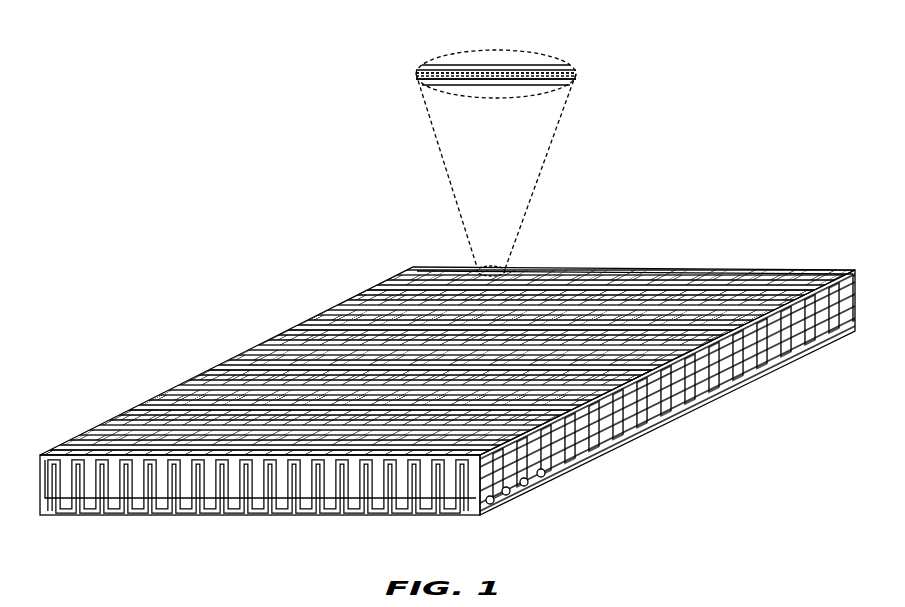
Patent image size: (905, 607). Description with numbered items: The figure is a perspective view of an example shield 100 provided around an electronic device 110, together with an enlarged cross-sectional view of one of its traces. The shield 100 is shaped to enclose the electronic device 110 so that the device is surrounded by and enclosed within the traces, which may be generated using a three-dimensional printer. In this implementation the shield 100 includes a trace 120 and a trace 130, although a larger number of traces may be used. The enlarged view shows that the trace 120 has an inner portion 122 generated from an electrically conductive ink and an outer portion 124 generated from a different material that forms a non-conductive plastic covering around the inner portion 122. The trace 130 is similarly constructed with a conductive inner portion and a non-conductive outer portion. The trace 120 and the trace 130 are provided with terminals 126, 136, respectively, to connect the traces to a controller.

The shield 100 is at (452, 286).
The electronic device 110 is at (148, 508).
The trace 120 is at (408, 66).
The inner portion 122 is at (490, 62).
The outer portion 124 is at (556, 60).
The terminals 126 is at (481, 496).
The trace 130 is at (728, 381).
The terminals 136 is at (517, 478).